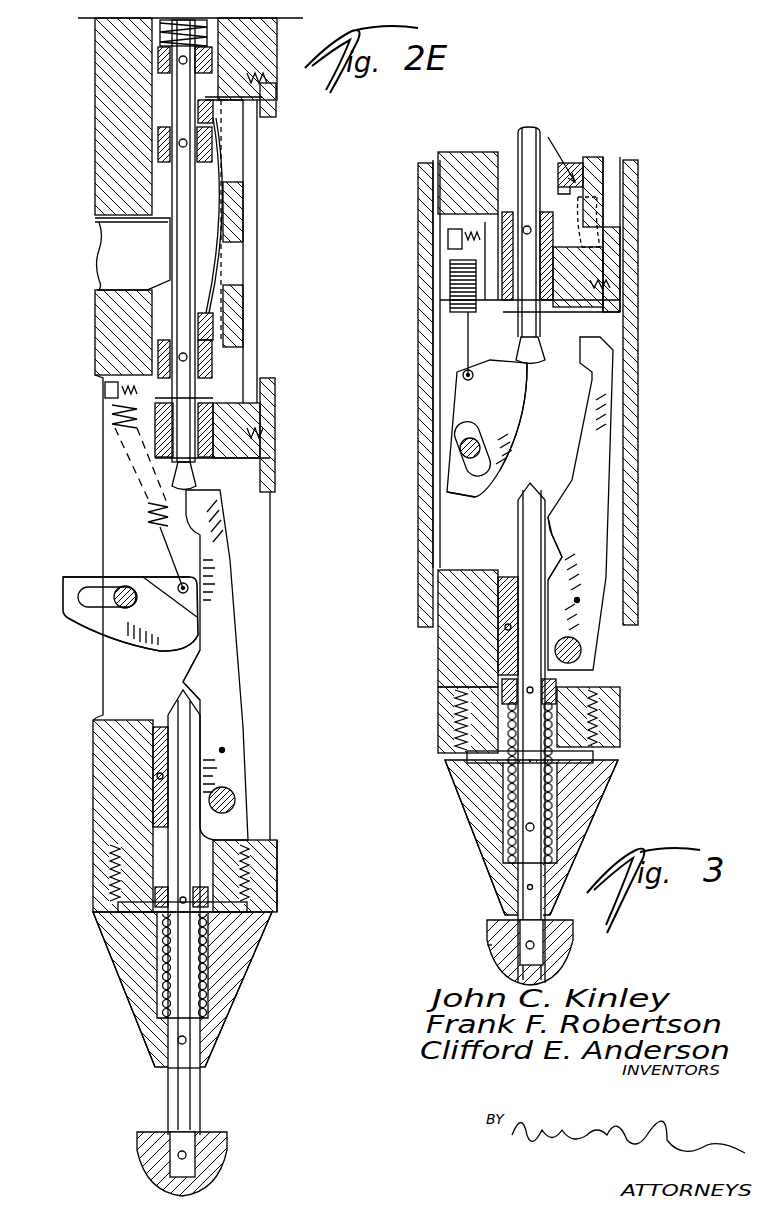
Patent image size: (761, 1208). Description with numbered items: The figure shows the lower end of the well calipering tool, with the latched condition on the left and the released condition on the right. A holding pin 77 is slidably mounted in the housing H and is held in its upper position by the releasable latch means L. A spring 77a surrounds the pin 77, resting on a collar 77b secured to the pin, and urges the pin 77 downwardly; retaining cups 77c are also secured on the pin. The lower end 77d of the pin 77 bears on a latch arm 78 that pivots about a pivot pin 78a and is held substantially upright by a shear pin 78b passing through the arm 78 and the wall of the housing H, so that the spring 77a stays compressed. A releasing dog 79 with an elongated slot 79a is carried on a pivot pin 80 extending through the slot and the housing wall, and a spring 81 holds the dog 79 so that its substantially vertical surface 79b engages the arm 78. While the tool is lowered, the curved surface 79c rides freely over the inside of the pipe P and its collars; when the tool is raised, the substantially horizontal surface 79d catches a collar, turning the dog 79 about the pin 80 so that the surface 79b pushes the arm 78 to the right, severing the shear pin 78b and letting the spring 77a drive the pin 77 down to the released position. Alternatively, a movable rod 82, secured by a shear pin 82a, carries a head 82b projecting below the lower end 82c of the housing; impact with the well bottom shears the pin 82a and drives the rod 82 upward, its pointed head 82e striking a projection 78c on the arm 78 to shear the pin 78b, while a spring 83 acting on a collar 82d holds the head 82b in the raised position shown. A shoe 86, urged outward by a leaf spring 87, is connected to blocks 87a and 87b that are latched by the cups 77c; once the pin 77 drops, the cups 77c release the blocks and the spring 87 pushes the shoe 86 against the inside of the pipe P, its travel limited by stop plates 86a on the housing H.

In FIG. 2E, the holding pin 77 is at (172, 263).
In FIG. 3, the holding pin 77 is at (518, 135).
In FIG. 2E, the spring 77a is at (160, 30).
In FIG. 2E, the collar 77b is at (158, 60).
In FIG. 2E, the retaining cups 77c is at (158, 142).
In FIG. 2E, the lower end of pin 77d is at (196, 480).
In FIG. 2E, the latch arm 78 is at (222, 605).
In FIG. 3, the latch arm 78 is at (580, 455).
In FIG. 2E, the pivot pin 78a is at (235, 800).
In FIG. 3, the pivot pin 78a is at (582, 655).
In FIG. 2E, the shear pin 78b is at (225, 750).
In FIG. 3, the shear pin 78b is at (580, 600).
In FIG. 2E, the projection 78c is at (188, 670).
In FIG. 3, the projection 78c is at (560, 540).
In FIG. 2E, the releasing dog 79 is at (63, 590).
In FIG. 3, the releasing dog 79 is at (460, 395).
In FIG. 2E, the elongated slot 79a is at (93, 605).
In FIG. 3, the elongated slot 79a is at (482, 432).
In FIG. 2E, the substantially vertical surface 79b is at (200, 625).
In FIG. 3, the substantially vertical surface 79b is at (470, 368).
In FIG. 2E, the curved surface 79c is at (80, 604).
In FIG. 3, the curved surface 79c is at (520, 445).
In FIG. 2E, the substantially horizontal surface 79d is at (75, 577).
In FIG. 3, the substantially horizontal surface 79d is at (447, 480).
In FIG. 2E, the pivot pin 80 is at (127, 586).
In FIG. 3, the pivot pin 80 is at (460, 448).
In FIG. 2E, the spring 81 is at (147, 515).
In FIG. 3, the spring 81 is at (450, 285).
In FIG. 3, the movable rod 82 is at (518, 545).
In FIG. 2E, the shear pin 82a is at (186, 1040).
In FIG. 3, the shear pin 82a is at (525, 828).
In FIG. 2E, the head 82b is at (227, 1150).
In FIG. 3, the head 82b is at (490, 925).
In FIG. 2E, the lower end of housing 82c is at (202, 1072).
In FIG. 3, the lower end of housing 82c is at (490, 940).
In FIG. 2E, the collar 82d is at (240, 912).
In FIG. 3, the collar 82d is at (558, 690).
In FIG. 2E, the pointed head 82e is at (176, 695).
In FIG. 3, the pointed head 82e is at (528, 486).
In FIG. 2E, the spring 83 is at (208, 972).
In FIG. 3, the spring 83 is at (555, 800).
In FIG. 2E, the shoe 86 is at (250, 248).
In FIG. 3, the shoe 86 is at (604, 160).
In FIG. 2E, the stop plates 86a is at (276, 100).
In FIG. 2E, the leaf spring 87 is at (215, 205).
In FIG. 3, the leaf spring 87 is at (556, 150).
In FIG. 2E, the block 87a is at (198, 110).
In FIG. 2E, the block 87b is at (213, 325).
In FIG. 3, the block 87b is at (585, 185).
In FIG. 2E, the housing H is at (270, 513).
In FIG. 2E, the releasable latch means L is at (103, 676).
In FIG. 3, the releasable latch means L is at (433, 518).
In FIG. 3, the pipe P is at (638, 187).